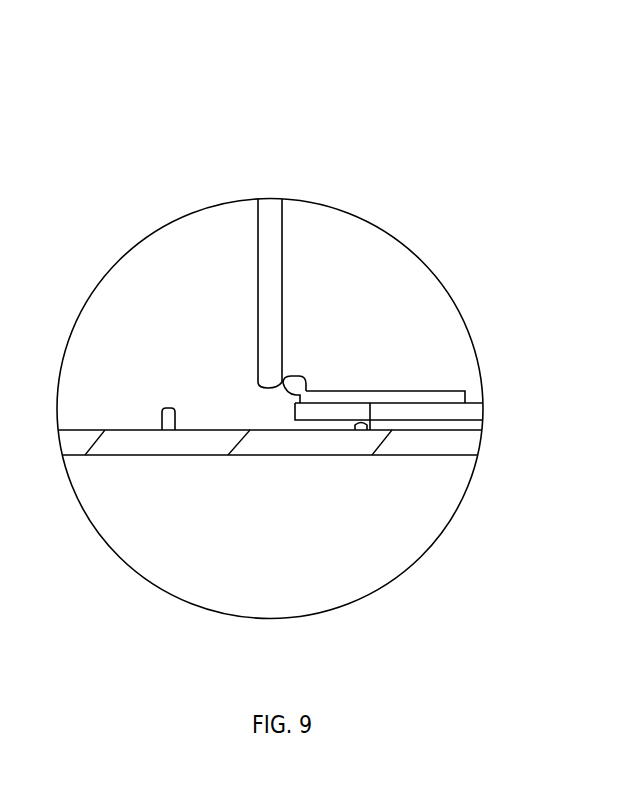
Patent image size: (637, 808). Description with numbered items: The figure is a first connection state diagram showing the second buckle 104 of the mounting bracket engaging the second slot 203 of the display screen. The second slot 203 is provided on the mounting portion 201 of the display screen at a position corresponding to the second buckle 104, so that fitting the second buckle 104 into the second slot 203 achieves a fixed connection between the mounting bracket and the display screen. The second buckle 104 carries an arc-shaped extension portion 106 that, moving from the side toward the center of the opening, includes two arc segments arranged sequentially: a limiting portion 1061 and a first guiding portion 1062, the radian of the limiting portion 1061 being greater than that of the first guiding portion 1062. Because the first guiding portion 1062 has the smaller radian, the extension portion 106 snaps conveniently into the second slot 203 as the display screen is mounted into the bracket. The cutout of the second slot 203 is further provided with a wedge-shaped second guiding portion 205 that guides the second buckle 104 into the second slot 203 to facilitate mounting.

The second buckle 104 is at (433, 393).
The extension portion 106 is at (382, 238).
The limiting portion 1061 is at (315, 390).
The first guiding portion 1062 is at (290, 380).
The mounting portion 201 is at (262, 302).
The second slot 203 is at (265, 407).
The second guiding portion 205 is at (268, 378).